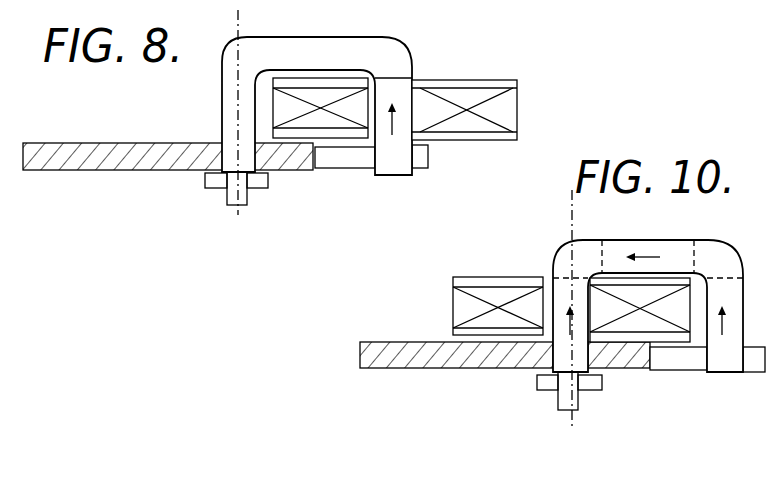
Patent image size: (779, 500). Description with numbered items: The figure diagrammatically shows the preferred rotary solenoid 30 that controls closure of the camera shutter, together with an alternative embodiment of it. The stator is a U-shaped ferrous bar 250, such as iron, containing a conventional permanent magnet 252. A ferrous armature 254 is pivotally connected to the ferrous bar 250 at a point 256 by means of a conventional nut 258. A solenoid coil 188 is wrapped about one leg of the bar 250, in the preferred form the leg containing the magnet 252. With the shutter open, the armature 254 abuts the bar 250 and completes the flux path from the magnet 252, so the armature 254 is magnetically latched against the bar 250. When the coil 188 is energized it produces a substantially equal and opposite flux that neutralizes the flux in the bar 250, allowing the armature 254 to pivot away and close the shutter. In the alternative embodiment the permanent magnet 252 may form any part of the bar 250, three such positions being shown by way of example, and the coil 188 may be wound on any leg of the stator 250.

In FIG. 8, the rotary solenoid 30 is at (434, 60).
In FIG. 8, the solenoid coil 188 is at (506, 112).
In FIG. 10, the solenoid coil 188 is at (462, 303).
In FIG. 8, the U-shaped ferrous bar 250 is at (331, 37).
In FIG. 10, the U-shaped ferrous bar 250 is at (710, 240).
In FIG. 8, the permanent magnet 252 is at (402, 150).
In FIG. 10, the permanent magnet 252 is at (663, 250).
In FIG. 8, the ferrous armature 254 is at (176, 143).
In FIG. 10, the ferrous armature 254 is at (447, 369).
In FIG. 8, the pivot point 256 is at (221, 178).
In FIG. 10, the pivot point 256 is at (550, 391).
In FIG. 8, the nut 258 is at (269, 186).
In FIG. 10, the nut 258 is at (588, 392).